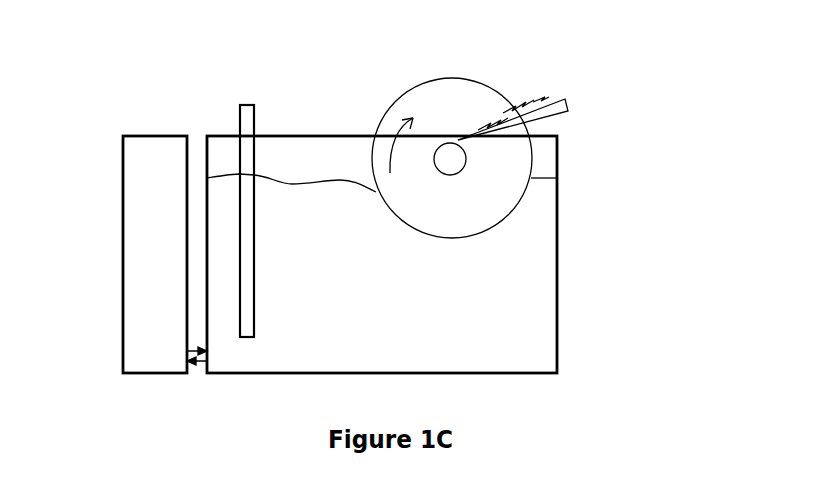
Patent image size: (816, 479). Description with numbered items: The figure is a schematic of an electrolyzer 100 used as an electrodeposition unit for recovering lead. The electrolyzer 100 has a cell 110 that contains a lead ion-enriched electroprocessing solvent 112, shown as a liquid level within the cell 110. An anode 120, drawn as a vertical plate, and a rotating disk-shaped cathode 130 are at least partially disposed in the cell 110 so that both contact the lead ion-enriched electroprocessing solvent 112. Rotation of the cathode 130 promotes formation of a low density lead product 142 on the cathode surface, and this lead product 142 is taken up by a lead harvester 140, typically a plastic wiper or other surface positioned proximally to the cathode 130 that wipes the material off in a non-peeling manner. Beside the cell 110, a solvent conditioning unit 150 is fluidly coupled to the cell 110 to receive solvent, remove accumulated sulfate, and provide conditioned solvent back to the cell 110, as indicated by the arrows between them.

The electrolyzer 100 is at (178, 100).
The cell 110 is at (558, 268).
The lead ion-enriched electroprocessing solvent 112 is at (547, 203).
The anode 120 is at (250, 105).
The rotating disk-shaped cathode 130 is at (460, 78).
The lead harvester 140 is at (567, 100).
The low density lead product 142 is at (515, 107).
The solvent conditioning unit 150 is at (123, 263).